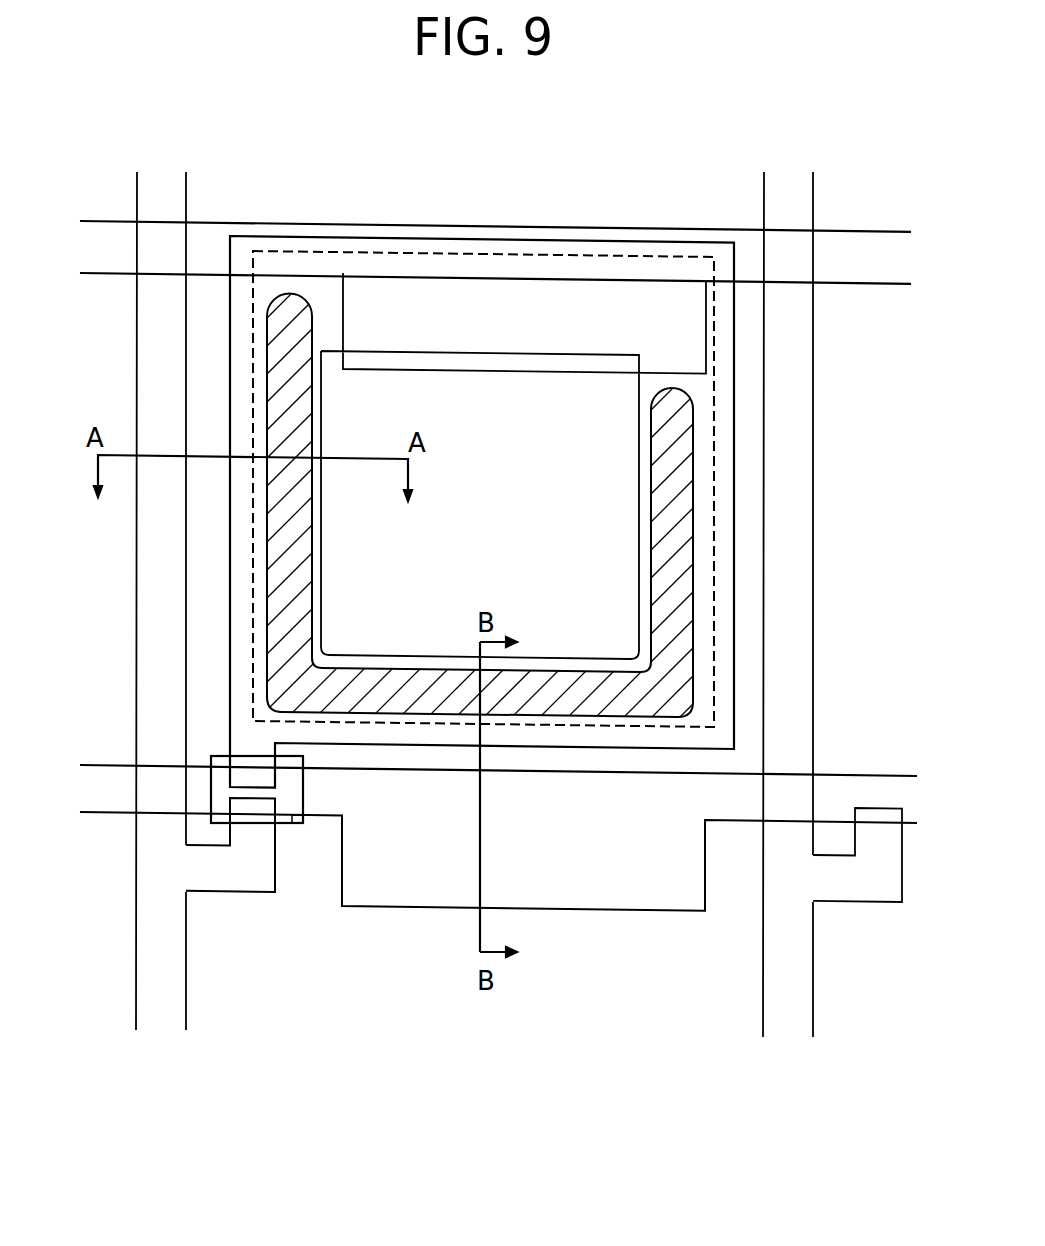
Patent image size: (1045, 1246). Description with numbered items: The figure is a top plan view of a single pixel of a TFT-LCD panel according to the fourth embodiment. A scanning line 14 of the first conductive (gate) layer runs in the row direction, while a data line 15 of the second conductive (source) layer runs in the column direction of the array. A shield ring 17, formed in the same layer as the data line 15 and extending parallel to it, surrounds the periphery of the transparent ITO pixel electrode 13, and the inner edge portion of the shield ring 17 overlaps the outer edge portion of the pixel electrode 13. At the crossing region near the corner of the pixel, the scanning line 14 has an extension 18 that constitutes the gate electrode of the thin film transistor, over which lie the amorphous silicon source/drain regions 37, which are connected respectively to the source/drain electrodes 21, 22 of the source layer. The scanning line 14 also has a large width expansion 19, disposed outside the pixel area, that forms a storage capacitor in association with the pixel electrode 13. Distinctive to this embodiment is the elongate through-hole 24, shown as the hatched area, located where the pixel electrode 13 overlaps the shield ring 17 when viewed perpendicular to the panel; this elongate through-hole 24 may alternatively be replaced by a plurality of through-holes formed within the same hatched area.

The pixel electrode 13 is at (713, 510).
The scanning line 14 is at (851, 231).
The data line 15 is at (137, 351).
The shield ring 17 is at (735, 354).
The extension 18 is at (293, 823).
The large width expansion 19 is at (573, 912).
The source/drain electrode 21 is at (228, 667).
The source/drain electrode 22 is at (276, 873).
The elongate through-hole 24 is at (697, 445).
The source/drain regions 37 is at (304, 786).